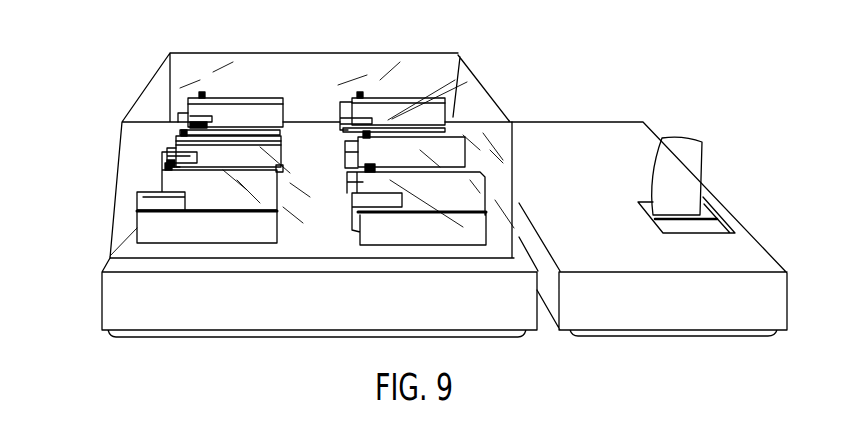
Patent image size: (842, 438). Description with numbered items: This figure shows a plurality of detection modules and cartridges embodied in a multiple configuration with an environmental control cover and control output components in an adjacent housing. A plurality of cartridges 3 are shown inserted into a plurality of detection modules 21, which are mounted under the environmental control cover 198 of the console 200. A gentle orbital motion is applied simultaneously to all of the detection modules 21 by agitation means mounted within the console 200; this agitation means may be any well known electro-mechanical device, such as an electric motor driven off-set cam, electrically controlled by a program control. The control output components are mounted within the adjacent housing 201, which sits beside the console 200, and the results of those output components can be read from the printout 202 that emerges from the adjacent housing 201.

The environmental control cover 198 is at (185, 53).
The cartridge 3 is at (278, 115).
The detection module 21 is at (300, 152).
The console 200 is at (102, 309).
The adjacent housing 201 is at (763, 228).
The printout 202 is at (702, 166).